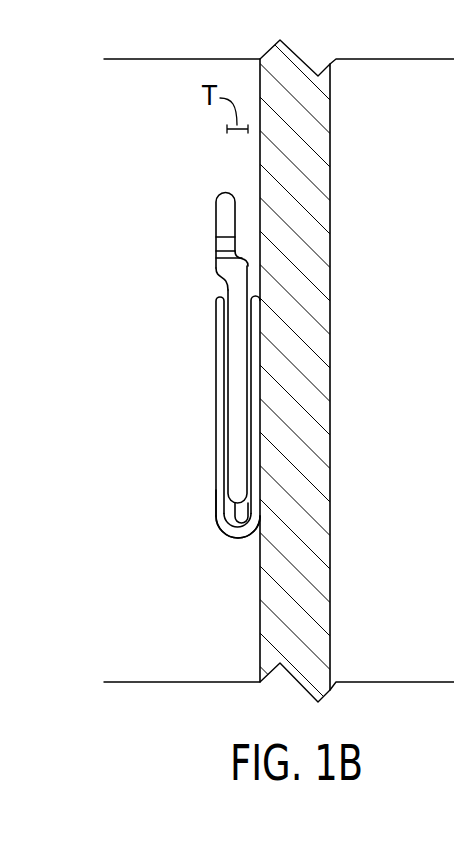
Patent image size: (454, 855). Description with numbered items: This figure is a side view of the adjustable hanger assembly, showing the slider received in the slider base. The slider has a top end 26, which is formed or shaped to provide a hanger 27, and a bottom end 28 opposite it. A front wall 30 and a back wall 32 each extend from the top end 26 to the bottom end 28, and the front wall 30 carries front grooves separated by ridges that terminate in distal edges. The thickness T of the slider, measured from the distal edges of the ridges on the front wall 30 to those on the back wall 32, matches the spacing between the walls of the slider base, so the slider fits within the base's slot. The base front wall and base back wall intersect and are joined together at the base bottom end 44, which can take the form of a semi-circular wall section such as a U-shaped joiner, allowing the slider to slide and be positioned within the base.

The top end 26 is at (228, 192).
The hanger 27 is at (230, 210).
The bottom end 28 is at (237, 505).
The front wall 30 is at (228, 287).
The back wall 32 is at (248, 268).
The base bottom end 44 is at (222, 518).